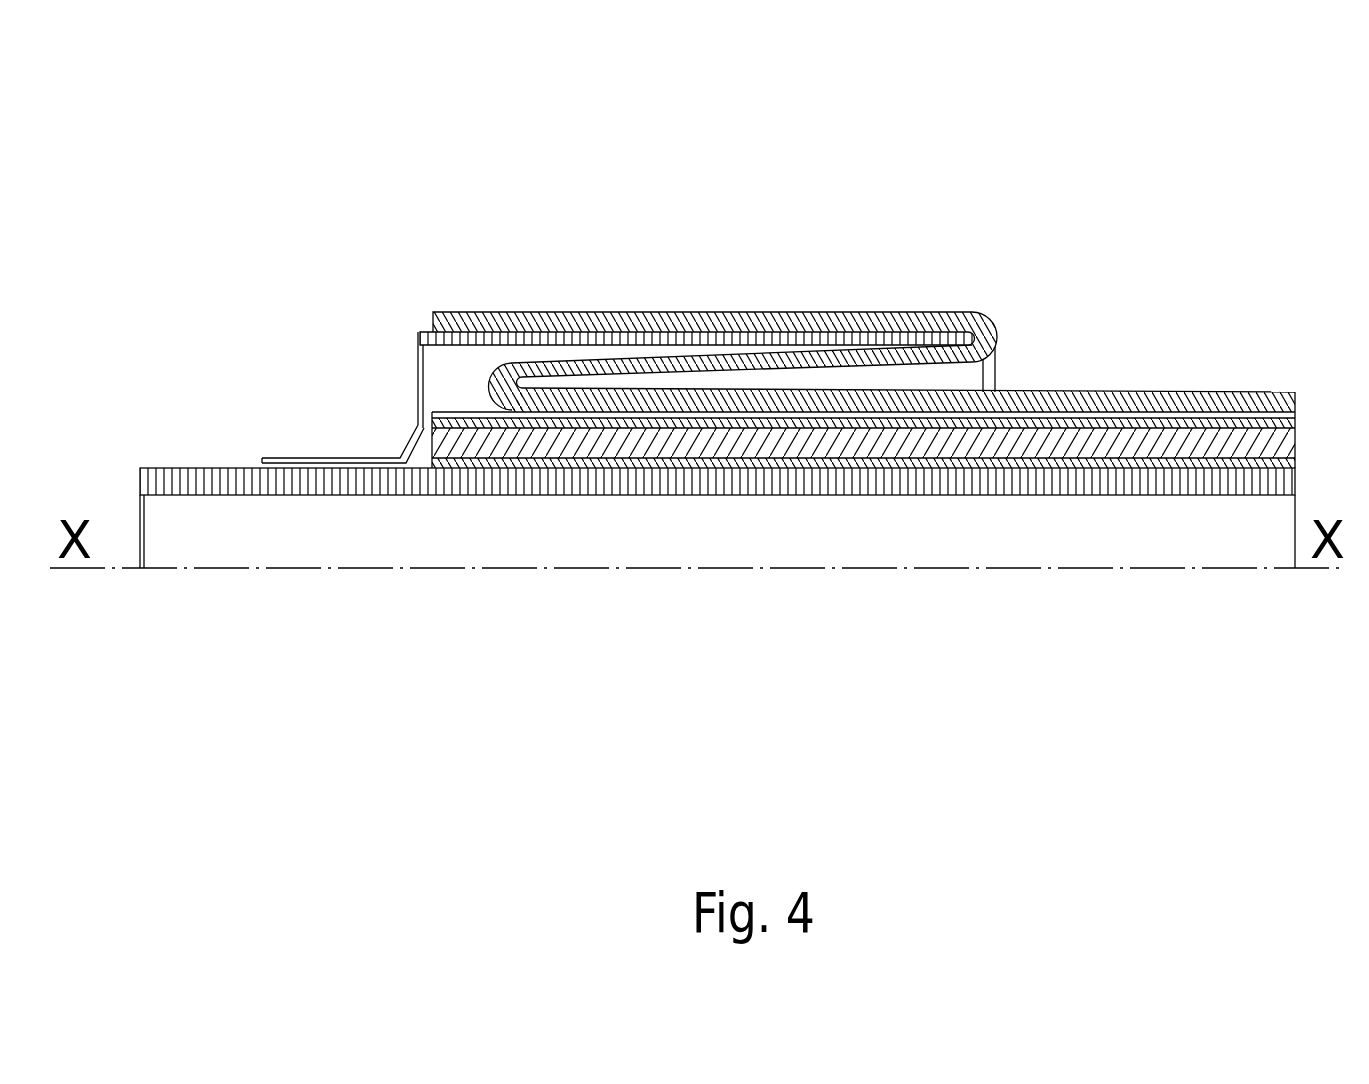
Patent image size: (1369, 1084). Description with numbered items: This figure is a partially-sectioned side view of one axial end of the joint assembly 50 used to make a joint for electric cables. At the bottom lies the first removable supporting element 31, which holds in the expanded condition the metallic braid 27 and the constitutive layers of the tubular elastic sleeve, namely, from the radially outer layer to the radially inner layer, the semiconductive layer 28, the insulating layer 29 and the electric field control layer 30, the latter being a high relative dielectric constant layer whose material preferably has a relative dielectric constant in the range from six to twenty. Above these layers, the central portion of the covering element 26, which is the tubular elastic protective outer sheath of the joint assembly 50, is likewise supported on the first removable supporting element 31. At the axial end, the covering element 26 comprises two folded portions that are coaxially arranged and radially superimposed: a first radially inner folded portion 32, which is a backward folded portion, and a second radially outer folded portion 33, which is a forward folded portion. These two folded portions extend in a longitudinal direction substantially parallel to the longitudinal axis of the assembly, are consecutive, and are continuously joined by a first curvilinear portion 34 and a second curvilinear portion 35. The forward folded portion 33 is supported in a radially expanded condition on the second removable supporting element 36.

The joint assembly 50 is at (400, 188).
The covering element 26 is at (1152, 393).
The metallic braid 27 is at (320, 460).
The semiconductive layer 28 is at (760, 426).
The insulating layer 29 is at (655, 440).
The electric field control layer 30 is at (537, 458).
The first removable supporting element 31 is at (188, 480).
The first radially inner folded portion 32 is at (678, 362).
The second radially outer folded portion 33 is at (582, 317).
The first curvilinear portion 34 is at (493, 383).
The second curvilinear portion 35 is at (993, 328).
The second removable supporting element 36 is at (418, 330).